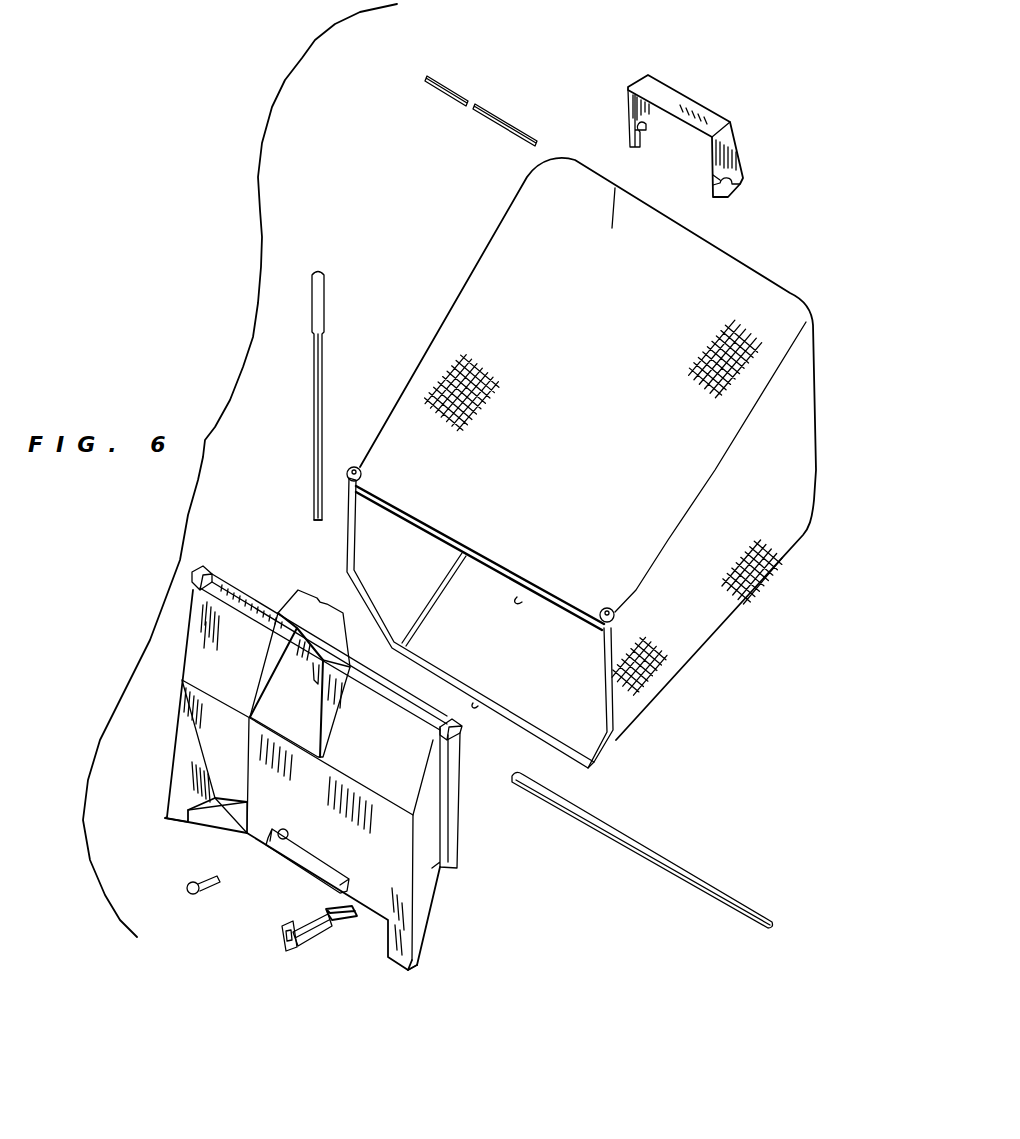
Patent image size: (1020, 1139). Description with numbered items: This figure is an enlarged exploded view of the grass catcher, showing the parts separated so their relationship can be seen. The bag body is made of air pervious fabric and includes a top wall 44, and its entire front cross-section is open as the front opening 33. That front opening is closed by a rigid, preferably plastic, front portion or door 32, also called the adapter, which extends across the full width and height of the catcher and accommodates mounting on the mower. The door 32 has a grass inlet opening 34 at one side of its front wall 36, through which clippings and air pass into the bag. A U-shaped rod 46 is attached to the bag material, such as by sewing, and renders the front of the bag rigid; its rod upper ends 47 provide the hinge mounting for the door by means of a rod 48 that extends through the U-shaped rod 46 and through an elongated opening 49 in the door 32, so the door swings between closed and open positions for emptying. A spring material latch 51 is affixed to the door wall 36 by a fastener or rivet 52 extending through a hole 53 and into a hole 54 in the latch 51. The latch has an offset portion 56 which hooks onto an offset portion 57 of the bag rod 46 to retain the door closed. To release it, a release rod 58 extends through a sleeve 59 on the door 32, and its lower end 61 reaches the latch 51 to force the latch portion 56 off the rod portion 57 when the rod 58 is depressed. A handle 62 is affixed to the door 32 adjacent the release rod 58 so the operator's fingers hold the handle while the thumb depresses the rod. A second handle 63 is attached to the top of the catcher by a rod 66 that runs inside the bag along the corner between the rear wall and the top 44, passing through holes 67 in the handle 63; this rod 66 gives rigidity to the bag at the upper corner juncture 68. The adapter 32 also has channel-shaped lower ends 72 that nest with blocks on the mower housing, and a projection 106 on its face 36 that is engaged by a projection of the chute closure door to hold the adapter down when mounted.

The front portion 32 is at (427, 893).
The front opening 33 is at (520, 600).
The grass inlet opening 34 is at (245, 760).
The front wall 36 is at (376, 838).
The top wall 44 is at (627, 398).
The U-shaped rod 46 is at (357, 540).
The rod upper ends 47 is at (625, 575).
The rod 48 is at (632, 832).
The elongated opening 49 is at (462, 737).
The latch 51 is at (303, 948).
The fastener or rivet 52 is at (210, 897).
The hole 53 is at (275, 838).
The hole 54 is at (287, 952).
The offset portion 56 is at (342, 922).
The offset portion 57 is at (476, 705).
The release member or rod 58 is at (315, 452).
The sleeve 59 is at (313, 670).
The lower end 61 is at (318, 518).
The handle 62 is at (297, 605).
The handle 63 is at (746, 148).
The rod 66 is at (488, 120).
The holes 67 is at (713, 185).
The juncture 68 is at (608, 222).
The channel-shaped lower ends 72 is at (408, 990).
The projection 106 is at (300, 852).